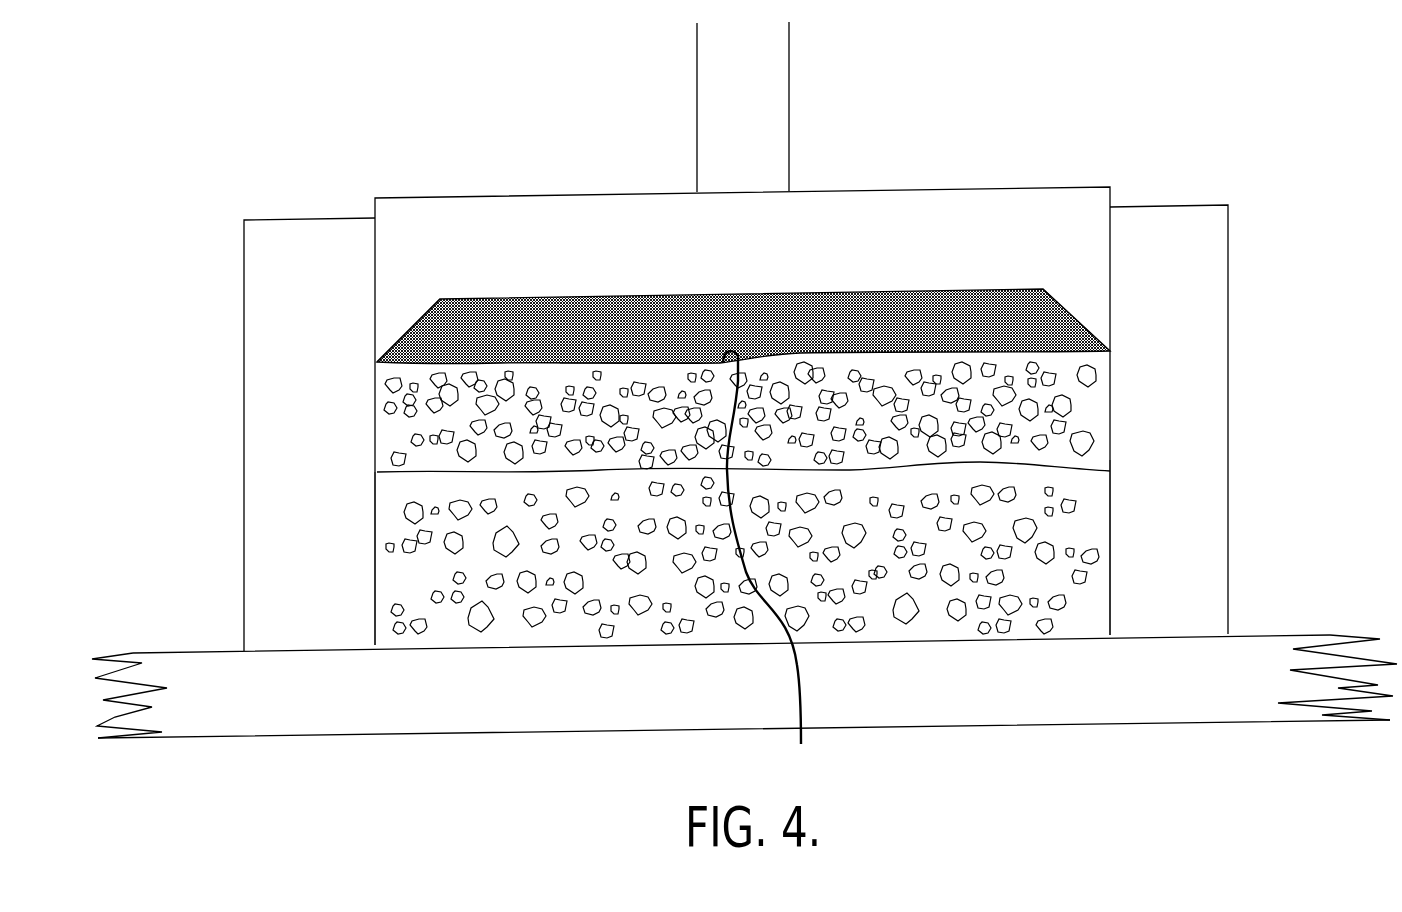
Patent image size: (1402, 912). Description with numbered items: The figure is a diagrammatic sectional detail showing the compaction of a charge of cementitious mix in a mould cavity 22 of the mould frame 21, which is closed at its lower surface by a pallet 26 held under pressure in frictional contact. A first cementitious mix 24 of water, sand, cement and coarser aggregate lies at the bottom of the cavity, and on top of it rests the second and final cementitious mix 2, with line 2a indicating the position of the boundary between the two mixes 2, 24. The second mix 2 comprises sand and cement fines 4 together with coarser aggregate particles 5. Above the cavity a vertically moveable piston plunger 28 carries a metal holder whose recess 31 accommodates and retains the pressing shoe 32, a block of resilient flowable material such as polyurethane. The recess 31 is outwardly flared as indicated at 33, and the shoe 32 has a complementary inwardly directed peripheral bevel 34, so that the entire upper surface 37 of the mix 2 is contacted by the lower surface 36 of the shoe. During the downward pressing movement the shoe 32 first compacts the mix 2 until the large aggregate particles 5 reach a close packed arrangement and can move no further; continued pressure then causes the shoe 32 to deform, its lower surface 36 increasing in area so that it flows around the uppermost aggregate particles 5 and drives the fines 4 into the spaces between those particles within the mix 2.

The second cementitious mix 2 is at (1085, 404).
The boundary line 2a is at (1112, 459).
The fines 4 is at (1017, 363).
The aggregate particles 5 is at (458, 453).
The mould frame 21 is at (297, 323).
The mould cavity 22 is at (1112, 546).
The first cementitious mix 24 is at (1085, 516).
The pallet 26 is at (525, 718).
The piston plunger 28 is at (767, 78).
The recess 31 is at (992, 217).
The pressing shoe 32 is at (535, 313).
The outward flare 33 is at (433, 312).
The peripheral bevel 34 is at (392, 343).
The lower surface 36 is at (641, 366).
The upper surface 37 is at (769, 568).